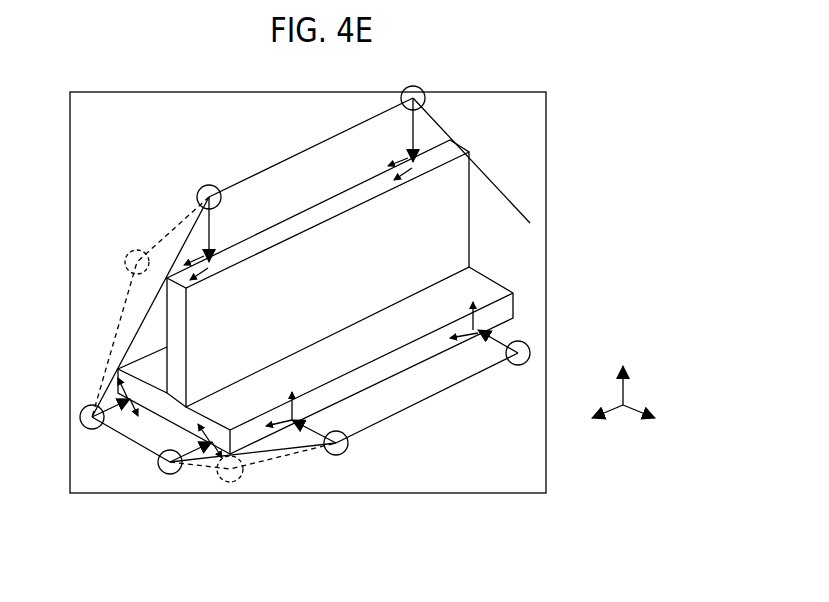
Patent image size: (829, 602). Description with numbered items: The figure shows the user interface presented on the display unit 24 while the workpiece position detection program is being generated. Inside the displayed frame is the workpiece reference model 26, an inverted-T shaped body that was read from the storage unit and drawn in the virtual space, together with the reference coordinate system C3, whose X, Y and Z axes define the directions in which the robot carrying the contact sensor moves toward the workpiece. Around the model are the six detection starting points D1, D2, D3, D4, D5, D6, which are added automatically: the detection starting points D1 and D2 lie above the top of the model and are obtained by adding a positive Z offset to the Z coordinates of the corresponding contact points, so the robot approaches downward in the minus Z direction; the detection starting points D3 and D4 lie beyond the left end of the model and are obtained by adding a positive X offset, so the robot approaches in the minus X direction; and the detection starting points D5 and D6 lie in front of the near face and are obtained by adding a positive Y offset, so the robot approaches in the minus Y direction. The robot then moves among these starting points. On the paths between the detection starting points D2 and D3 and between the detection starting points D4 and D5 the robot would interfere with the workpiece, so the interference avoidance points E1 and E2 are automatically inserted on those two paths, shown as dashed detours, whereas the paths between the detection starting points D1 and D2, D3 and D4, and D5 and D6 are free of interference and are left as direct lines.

The display unit 24 is at (547, 157).
The workpiece reference model 26 is at (300, 213).
The detection starting point D1 is at (421, 89).
The detection starting point D2 is at (211, 185).
The detection starting point D3 is at (82, 410).
The detection starting point D4 is at (177, 472).
The detection starting point D5 is at (335, 455).
The detection starting point D6 is at (528, 348).
The interference avoidance point E1 is at (136, 250).
The interference avoidance point E2 is at (232, 482).
The reference coordinate system C3 is at (633, 410).